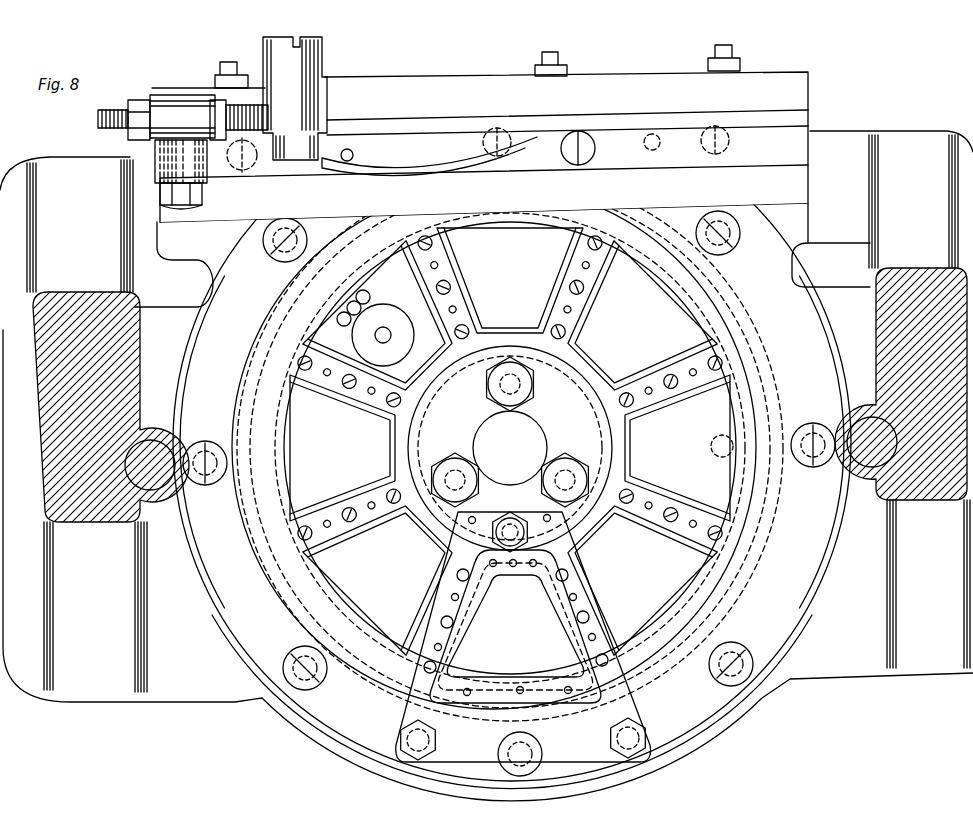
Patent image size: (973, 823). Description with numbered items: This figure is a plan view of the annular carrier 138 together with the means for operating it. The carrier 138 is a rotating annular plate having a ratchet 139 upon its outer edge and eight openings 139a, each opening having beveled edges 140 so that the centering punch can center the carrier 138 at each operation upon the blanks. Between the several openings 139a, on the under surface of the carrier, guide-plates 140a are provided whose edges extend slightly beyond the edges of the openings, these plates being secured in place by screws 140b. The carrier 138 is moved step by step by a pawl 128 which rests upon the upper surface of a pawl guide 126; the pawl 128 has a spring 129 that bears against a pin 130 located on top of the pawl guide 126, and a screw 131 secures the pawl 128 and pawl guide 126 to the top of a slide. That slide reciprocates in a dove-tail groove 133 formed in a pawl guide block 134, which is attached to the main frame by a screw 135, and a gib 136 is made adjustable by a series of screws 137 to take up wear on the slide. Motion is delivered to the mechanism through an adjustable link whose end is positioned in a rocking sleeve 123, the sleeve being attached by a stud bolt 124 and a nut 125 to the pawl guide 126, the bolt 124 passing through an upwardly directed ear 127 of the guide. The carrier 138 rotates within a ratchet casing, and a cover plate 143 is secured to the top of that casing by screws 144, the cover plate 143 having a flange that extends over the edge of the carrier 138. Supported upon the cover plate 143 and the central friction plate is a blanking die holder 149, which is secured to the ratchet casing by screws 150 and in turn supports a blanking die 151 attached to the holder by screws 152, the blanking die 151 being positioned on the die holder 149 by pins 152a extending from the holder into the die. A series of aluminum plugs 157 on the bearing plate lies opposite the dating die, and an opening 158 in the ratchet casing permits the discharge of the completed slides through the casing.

The rocking sleeve 123 is at (172, 103).
The stud bolt 124 is at (165, 150).
The nut 125 is at (183, 200).
The pawl guide 126 is at (220, 172).
The upwardly directed ear 127 is at (162, 172).
The pawl 128 is at (540, 153).
The spring 129 is at (407, 167).
The pin 130 is at (348, 152).
The screw 131 is at (583, 143).
The dove-tail groove 133 is at (788, 137).
The pawl guide block 134 is at (785, 90).
The screw 135 is at (735, 140).
The gib 136 is at (797, 118).
The screws 137 is at (227, 63).
The annular carrier 138 is at (392, 666).
The ratchet 139 is at (593, 193).
The openings 139a is at (518, 441).
The beveled edges 140 is at (500, 233).
The guide-plates 140a is at (677, 493).
The screws 140b is at (670, 378).
The cover plate 143 is at (673, 727).
The screws 144 is at (810, 463).
The blanking die holder 149 is at (460, 747).
The screws 150 is at (512, 526).
The blanking die 151 is at (565, 605).
The screws 152 is at (640, 673).
The pins 152a is at (568, 694).
The aluminum plugs 157 is at (345, 312).
The opening 158 is at (342, 448).